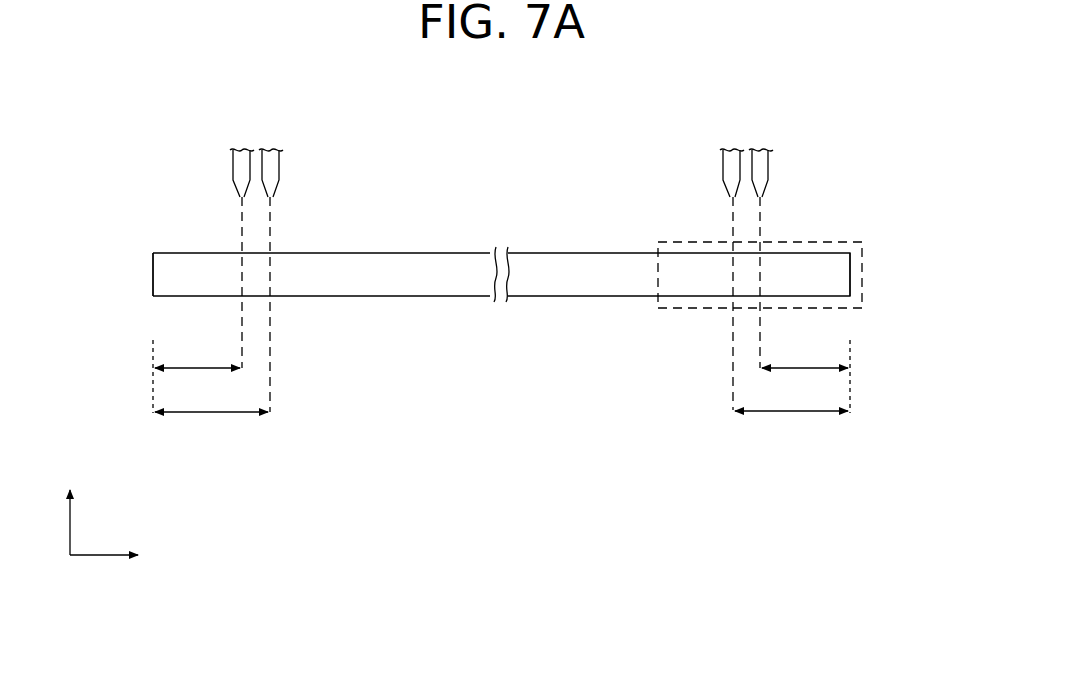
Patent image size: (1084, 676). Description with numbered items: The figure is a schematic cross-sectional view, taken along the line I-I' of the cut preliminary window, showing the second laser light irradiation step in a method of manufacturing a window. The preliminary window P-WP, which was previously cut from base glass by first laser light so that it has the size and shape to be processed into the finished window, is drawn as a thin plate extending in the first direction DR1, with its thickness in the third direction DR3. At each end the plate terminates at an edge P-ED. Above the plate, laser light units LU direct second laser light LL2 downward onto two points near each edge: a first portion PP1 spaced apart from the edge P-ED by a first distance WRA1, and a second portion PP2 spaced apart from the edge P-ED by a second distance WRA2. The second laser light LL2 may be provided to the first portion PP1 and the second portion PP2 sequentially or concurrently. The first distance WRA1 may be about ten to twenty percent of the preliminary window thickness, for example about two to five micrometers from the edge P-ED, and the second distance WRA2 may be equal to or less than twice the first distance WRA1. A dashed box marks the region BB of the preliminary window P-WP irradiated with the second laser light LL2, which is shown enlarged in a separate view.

The preliminary window P-WP is at (370, 283).
The edge of the preliminary window P-ED is at (147, 273).
The region BB is at (682, 310).
The first portion PP1 is at (236, 252).
The second portion PP2 is at (276, 252).
The laser light unit LU is at (731, 170).
The second laser light LL2 is at (733, 213).
The line I-I' I is at (506, 363).
The first distance WRA1 is at (501, 385).
The second distance WRA2 is at (501, 428).
The third direction DR3 is at (76, 507).
The first direction DR1 is at (133, 556).